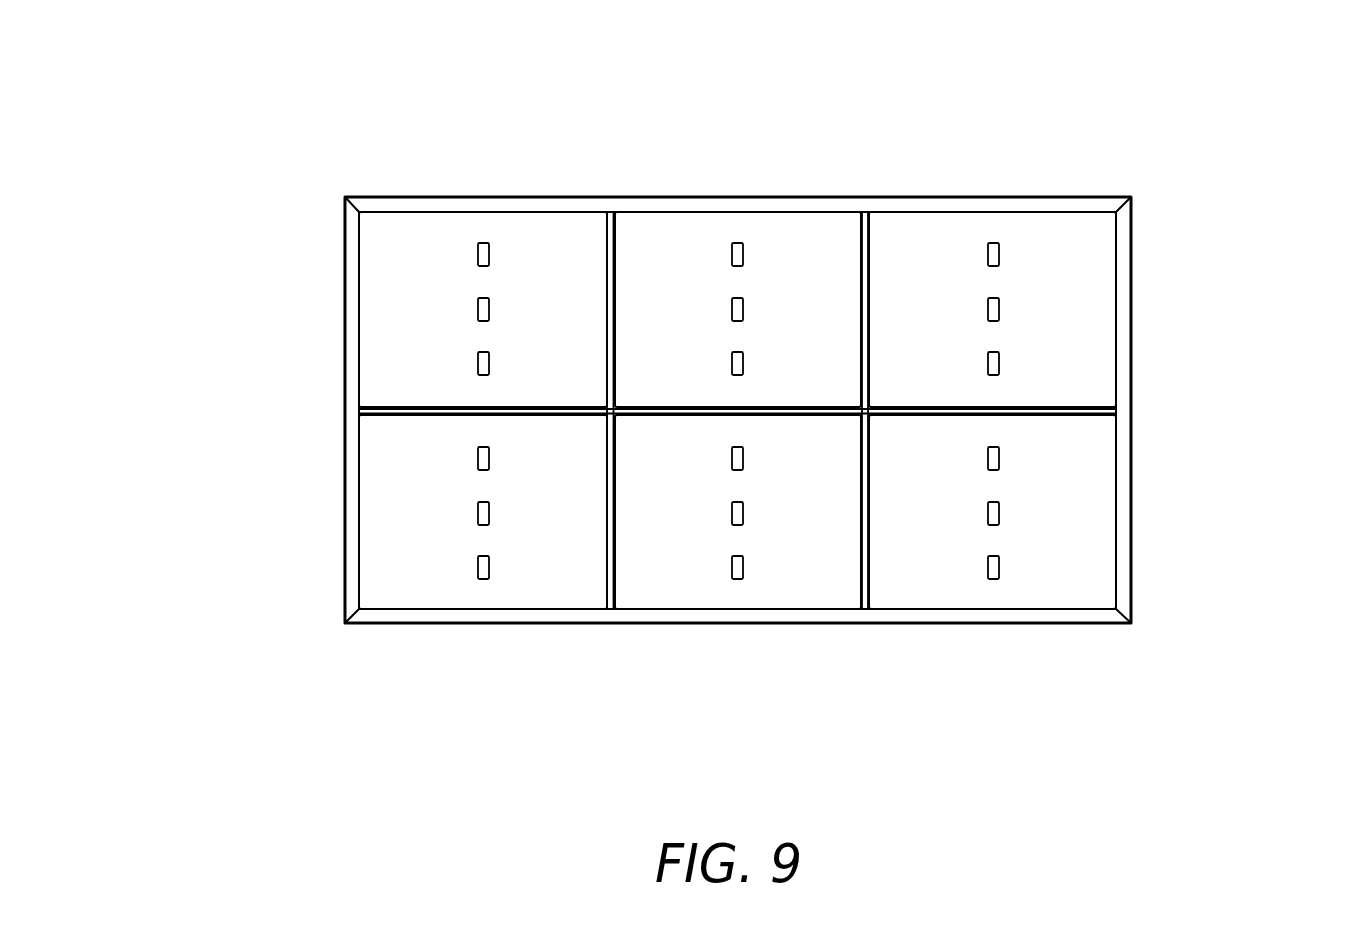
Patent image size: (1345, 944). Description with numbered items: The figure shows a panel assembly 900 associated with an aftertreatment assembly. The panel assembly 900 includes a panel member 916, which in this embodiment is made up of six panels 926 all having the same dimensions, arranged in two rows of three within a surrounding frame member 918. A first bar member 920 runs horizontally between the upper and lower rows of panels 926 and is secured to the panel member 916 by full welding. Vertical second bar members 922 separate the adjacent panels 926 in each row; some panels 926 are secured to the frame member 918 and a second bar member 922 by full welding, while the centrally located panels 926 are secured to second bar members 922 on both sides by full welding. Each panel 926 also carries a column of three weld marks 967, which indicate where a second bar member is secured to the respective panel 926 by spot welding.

The panel assembly 900 is at (1240, 70).
The panel member 916 is at (1068, 506).
The frame member 918 is at (1168, 280).
The first bar member 920 is at (1083, 410).
The second bar member 922 is at (610, 216).
The panel 926 is at (815, 230).
The weld mark 967 is at (483, 306).